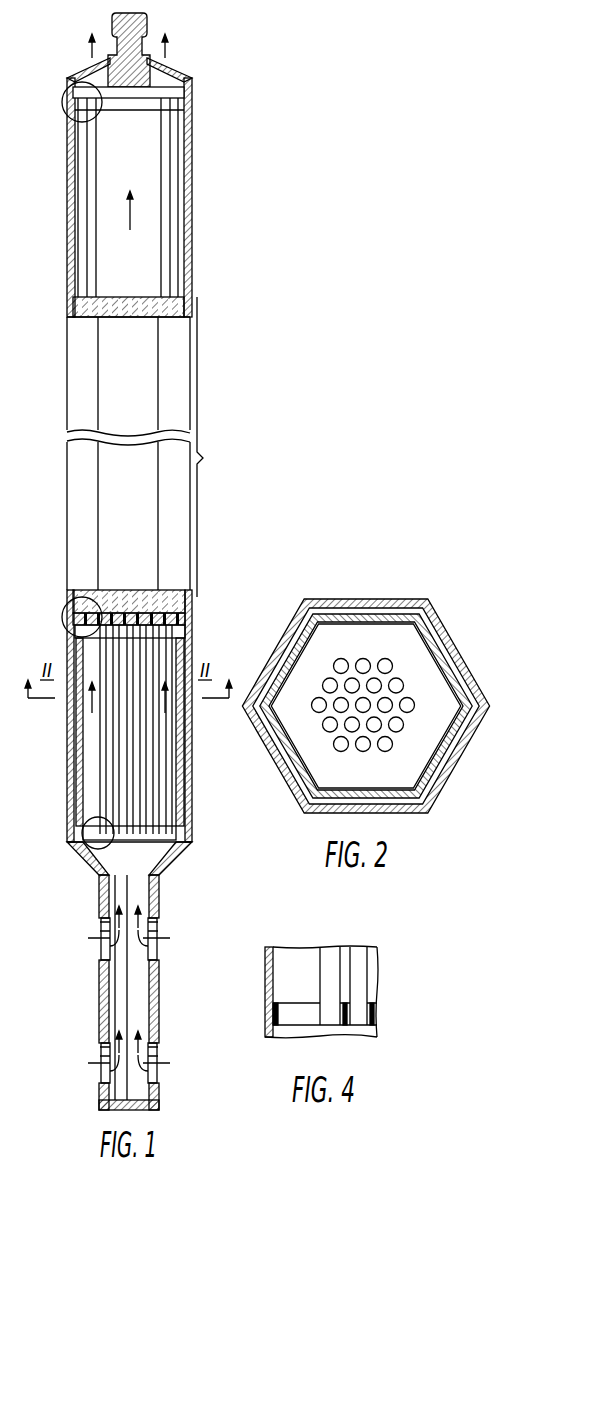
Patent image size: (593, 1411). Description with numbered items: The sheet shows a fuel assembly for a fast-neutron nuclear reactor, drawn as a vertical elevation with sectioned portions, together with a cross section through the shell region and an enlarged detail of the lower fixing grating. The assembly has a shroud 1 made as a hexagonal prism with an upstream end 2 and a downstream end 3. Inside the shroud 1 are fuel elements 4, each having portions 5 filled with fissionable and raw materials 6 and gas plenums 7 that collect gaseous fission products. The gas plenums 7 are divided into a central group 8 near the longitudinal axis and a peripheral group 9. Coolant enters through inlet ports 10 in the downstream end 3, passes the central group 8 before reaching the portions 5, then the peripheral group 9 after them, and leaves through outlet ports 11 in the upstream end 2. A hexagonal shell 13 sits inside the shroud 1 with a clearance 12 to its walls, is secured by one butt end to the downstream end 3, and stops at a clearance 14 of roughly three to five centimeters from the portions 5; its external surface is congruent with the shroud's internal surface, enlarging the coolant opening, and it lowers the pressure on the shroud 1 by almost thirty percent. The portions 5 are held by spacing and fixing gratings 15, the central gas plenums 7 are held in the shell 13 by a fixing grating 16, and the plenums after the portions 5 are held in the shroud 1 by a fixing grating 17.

In FIG. 1, the shroud 1 is at (192, 190).
In FIG. 2, the shroud 1 is at (378, 600).
In FIG. 1, the upstream end 2 is at (148, 22).
In FIG. 1, the downstream end 3 is at (157, 997).
In FIG. 1, the fuel elements 4 is at (70, 595).
In FIG. 1, the portions filled with fissionable and raw materials 5 is at (206, 447).
In FIG. 1, the fissionable and raw materials 6 is at (165, 590).
In FIG. 1, the gas plenums 7 is at (178, 140).
In FIG. 2, the gas plenums 7 is at (385, 660).
In FIG. 4, the gas plenums 7 is at (360, 980).
In FIG. 1, the central group 8 is at (92, 777).
In FIG. 2, the central group 8 is at (418, 665).
In FIG. 4, the central group 8 is at (381, 953).
In FIG. 1, the peripheral group 9 is at (70, 155).
In FIG. 1, the inlet ports 10 is at (158, 932).
In FIG. 1, the outlet ports 11 is at (172, 72).
In FIG. 1, the clearance 12 is at (183, 712).
In FIG. 2, the clearance 12 is at (348, 613).
In FIG. 1, the shell 13 is at (76, 657).
In FIG. 2, the shell 13 is at (327, 622).
In FIG. 4, the shell 13 is at (265, 993).
In FIG. 1, the clearance 14 is at (180, 632).
In FIG. 1, the spacing and fixing gratings 15 is at (183, 293).
In FIG. 1, the fixing grating 16 is at (147, 827).
In FIG. 4, the fixing grating 16 is at (343, 1018).
In FIG. 1, the fixing grating 17 is at (178, 104).